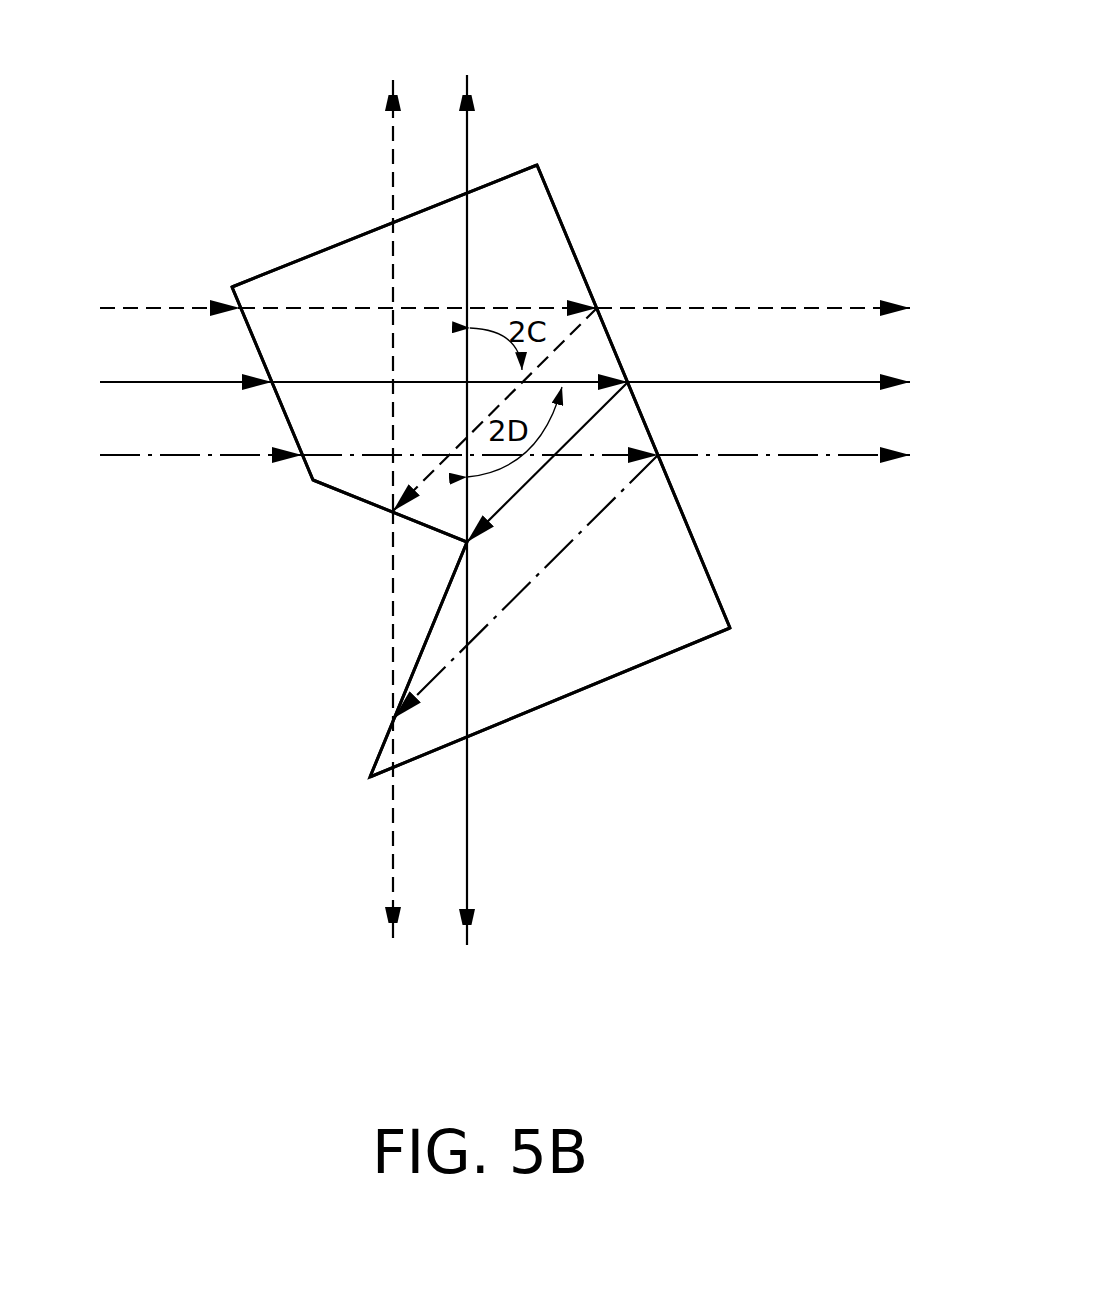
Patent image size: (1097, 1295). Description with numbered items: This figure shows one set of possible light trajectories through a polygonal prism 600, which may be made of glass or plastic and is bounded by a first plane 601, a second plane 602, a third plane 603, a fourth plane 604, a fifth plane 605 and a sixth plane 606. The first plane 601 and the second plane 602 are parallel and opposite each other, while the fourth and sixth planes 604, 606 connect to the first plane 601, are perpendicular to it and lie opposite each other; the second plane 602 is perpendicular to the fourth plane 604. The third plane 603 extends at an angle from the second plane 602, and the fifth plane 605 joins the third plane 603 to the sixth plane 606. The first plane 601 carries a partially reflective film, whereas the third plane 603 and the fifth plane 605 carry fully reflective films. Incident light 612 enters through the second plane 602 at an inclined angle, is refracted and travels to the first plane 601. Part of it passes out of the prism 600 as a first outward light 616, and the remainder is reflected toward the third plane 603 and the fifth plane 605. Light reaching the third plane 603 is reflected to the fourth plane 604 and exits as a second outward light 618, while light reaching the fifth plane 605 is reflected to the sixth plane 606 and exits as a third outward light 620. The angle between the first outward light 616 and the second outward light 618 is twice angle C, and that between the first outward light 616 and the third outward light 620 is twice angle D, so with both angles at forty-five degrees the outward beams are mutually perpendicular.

The polygonal prism 600 is at (585, 83).
The first plane 601 is at (578, 257).
The second plane 602 is at (227, 292).
The third plane 603 is at (342, 493).
The fourth plane 604 is at (499, 180).
The fifth plane 605 is at (413, 667).
The sixth plane 606 is at (667, 660).
The incident light 612 is at (160, 307).
The first outward light 616 is at (770, 457).
The second outward light 618 is at (393, 140).
The third outward light 620 is at (467, 848).